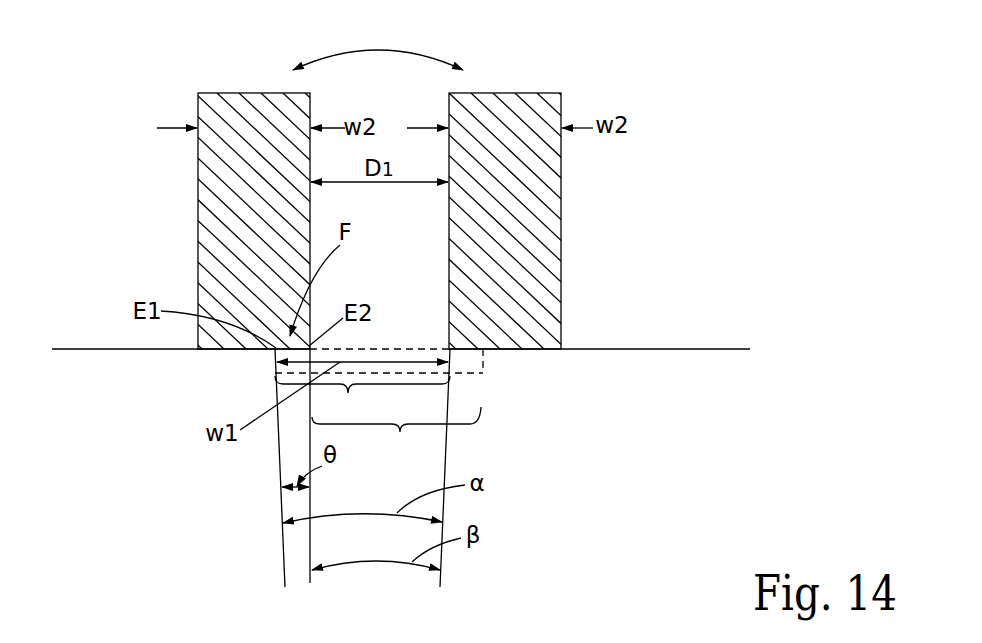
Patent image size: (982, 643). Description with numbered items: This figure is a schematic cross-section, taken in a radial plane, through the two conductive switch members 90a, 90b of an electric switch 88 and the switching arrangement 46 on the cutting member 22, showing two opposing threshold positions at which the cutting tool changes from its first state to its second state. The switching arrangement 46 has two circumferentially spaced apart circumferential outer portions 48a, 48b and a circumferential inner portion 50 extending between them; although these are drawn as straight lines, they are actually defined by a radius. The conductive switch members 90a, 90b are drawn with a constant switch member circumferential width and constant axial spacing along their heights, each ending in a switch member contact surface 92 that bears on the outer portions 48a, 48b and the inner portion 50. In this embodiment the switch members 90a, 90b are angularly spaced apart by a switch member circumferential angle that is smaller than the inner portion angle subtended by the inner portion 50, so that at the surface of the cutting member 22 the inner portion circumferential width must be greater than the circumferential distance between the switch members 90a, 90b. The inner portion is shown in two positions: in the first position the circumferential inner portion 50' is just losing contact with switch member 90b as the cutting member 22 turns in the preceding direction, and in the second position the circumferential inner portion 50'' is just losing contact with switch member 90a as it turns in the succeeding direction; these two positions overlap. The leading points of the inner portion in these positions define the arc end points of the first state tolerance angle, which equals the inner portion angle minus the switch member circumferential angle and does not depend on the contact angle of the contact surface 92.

The cutting member 22 is at (182, 510).
The switching arrangement 46 is at (729, 399).
The circumferential outer portion 48a is at (222, 349).
The circumferential outer portion 48b is at (517, 348).
The circumferential inner portion 50 is at (362, 443).
The circumferential inner portion in the first position 50' is at (379, 383).
The circumferential inner portion in the second position 50'' is at (396, 431).
The electric switch 88 is at (624, 79).
The conductive switch member 90a is at (196, 183).
The conductive switch member 90b is at (563, 183).
The switch member contact surface 92 is at (600, 388).